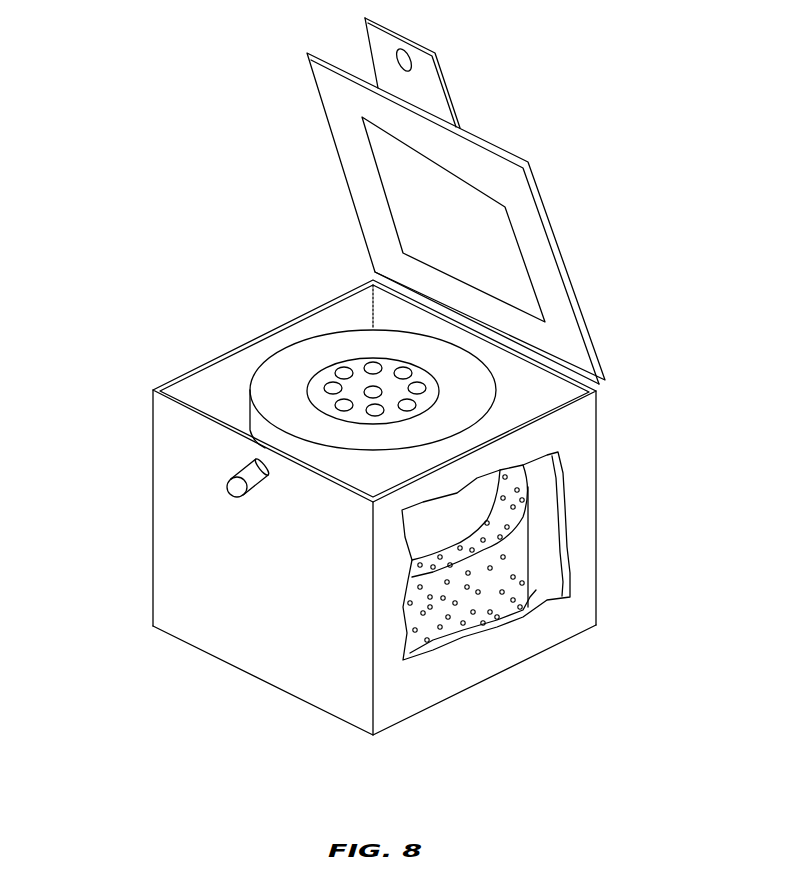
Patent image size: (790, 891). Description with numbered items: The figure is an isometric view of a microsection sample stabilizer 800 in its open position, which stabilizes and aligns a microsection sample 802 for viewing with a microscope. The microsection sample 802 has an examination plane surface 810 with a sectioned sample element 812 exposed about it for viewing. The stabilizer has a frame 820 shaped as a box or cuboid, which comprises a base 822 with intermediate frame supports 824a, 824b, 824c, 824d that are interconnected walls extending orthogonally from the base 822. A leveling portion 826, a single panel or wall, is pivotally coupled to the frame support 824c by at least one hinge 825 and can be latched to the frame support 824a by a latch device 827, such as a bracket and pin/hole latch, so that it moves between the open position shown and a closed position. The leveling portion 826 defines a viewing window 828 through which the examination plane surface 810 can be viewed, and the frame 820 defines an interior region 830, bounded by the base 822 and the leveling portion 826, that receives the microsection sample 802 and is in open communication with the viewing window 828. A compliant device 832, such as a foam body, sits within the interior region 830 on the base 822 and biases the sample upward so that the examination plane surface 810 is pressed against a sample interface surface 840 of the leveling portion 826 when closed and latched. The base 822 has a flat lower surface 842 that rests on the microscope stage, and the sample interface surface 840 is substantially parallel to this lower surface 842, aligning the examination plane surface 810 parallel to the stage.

The microsection sample stabilizer 800 is at (163, 193).
The microsection sample 802 is at (277, 377).
The examination plane surface 810 is at (320, 337).
The sectioned sample element 812 is at (320, 370).
The frame 820 is at (130, 472).
The base 822 is at (165, 582).
The intermediate frame support 824a is at (220, 618).
The intermediate frame support 824b is at (423, 670).
The intermediate frame support 824c is at (597, 448).
The intermediate frame support 824d is at (152, 422).
The hinge 825 is at (557, 362).
The leveling portion 826 is at (332, 93).
The latch device 827 is at (360, 26).
The viewing window 828 is at (403, 190).
The interior region 830 is at (357, 307).
The compliant device 832 is at (515, 563).
The sample interface surface 840 is at (347, 140).
The lower surface 842 is at (240, 673).